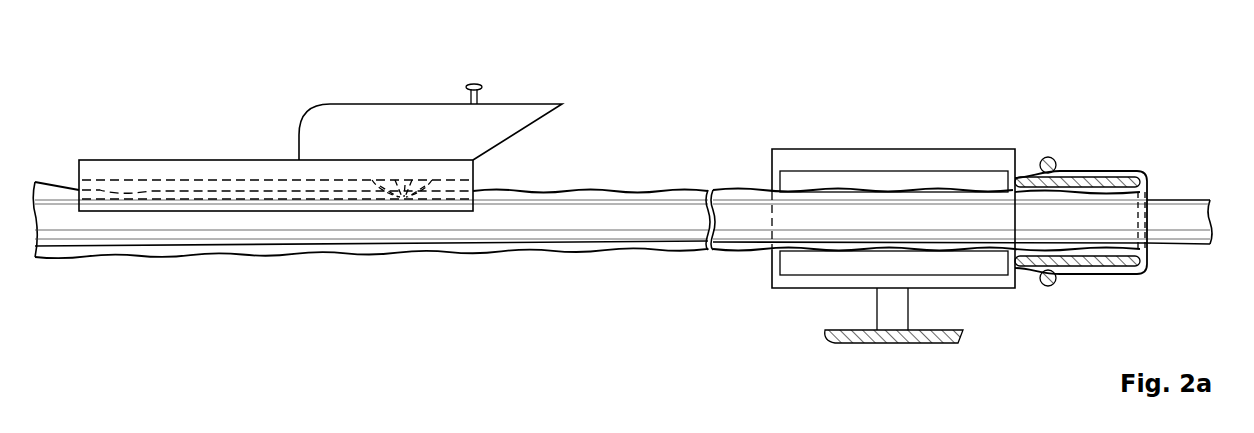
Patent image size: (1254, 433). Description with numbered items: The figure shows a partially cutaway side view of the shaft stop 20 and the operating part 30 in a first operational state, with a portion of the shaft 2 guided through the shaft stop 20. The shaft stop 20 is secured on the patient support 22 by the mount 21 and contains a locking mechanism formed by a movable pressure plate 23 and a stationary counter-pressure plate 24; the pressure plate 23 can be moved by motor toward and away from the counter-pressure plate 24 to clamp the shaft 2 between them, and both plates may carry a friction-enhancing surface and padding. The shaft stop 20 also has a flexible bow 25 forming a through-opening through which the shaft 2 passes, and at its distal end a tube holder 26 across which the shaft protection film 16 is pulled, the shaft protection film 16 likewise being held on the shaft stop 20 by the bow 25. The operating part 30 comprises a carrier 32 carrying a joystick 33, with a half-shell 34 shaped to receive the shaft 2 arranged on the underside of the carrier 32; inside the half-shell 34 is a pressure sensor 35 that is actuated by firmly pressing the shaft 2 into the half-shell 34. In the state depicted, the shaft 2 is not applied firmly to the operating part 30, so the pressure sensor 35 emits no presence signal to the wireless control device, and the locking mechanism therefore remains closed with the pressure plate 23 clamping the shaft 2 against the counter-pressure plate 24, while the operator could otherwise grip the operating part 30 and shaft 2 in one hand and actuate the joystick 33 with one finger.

The shaft 2 is at (590, 232).
The shaft protection film 16 is at (640, 188).
The shaft stop 20 is at (893, 231).
The mount 21 is at (893, 315).
The patient support 22 is at (848, 338).
The movable pressure plate 23 is at (838, 180).
The stationary counter-pressure plate 24 is at (798, 264).
The flexible bow 25 is at (1048, 157).
The tube holder 26 is at (1094, 182).
The operating part 30 is at (320, 161).
The carrier 32 is at (416, 120).
The joystick 33 is at (474, 82).
The half-shell 34 is at (164, 168).
The pressure sensor 35 is at (405, 200).